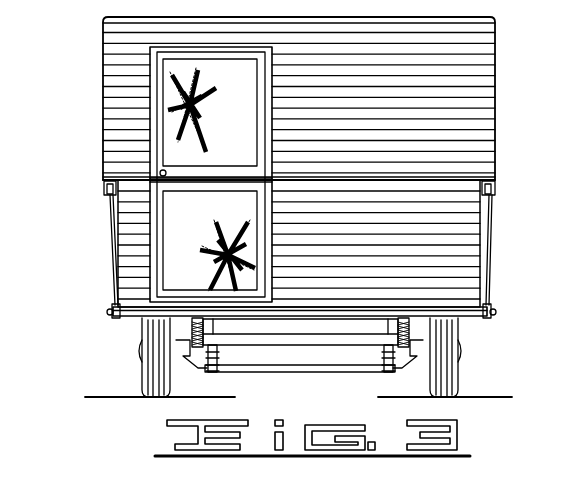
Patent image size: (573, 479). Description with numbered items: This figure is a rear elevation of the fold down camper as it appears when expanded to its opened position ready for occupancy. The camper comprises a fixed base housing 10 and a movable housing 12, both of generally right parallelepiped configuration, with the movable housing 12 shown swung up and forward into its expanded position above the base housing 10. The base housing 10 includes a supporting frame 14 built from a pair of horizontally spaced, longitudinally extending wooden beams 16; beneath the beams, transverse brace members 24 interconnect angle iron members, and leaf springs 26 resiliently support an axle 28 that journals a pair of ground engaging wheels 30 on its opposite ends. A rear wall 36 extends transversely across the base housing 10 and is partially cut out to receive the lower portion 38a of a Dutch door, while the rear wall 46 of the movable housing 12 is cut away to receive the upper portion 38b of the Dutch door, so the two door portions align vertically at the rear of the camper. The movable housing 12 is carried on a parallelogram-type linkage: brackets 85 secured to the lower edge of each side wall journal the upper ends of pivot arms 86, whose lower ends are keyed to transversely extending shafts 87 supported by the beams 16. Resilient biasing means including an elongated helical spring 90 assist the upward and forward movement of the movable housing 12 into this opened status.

The base housing 10 is at (299, 207).
The movable housing 12 is at (273, 162).
The supporting frame 14 is at (130, 321).
The wooden beams 16 is at (214, 327).
The transverse brace members 24 is at (265, 342).
The leaf springs 26 is at (217, 356).
The axle 28 is at (298, 373).
The ground engaging wheels 30 is at (150, 374).
The rear wall 36 is at (355, 231).
The lower portion of Dutch door 38a is at (209, 219).
The upper portion of Dutch door 38b is at (246, 124).
The rear wall 46 is at (361, 97).
The brackets 85 is at (104, 188).
The pivot arms 86 is at (112, 256).
The transversely extending shafts 87 is at (110, 313).
The helical spring 90 is at (196, 331).